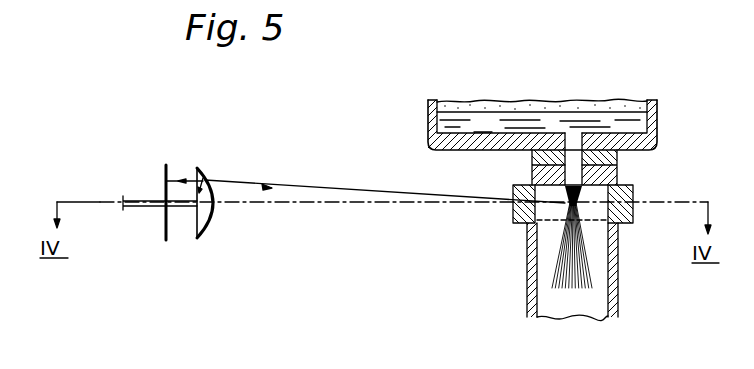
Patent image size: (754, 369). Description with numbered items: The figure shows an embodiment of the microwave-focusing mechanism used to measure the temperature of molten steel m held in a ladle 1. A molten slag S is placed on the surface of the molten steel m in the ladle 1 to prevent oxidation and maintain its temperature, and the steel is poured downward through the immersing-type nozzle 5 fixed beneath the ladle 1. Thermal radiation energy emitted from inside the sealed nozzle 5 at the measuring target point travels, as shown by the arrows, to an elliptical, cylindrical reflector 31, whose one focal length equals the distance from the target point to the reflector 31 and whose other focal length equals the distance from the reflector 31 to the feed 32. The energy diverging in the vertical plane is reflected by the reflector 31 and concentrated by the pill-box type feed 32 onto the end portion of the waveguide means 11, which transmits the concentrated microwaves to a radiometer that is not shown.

The ladle 1 is at (562, 119).
The immersing-type nozzle 5 is at (633, 195).
The waveguide means 11 is at (142, 208).
The reflector 31 is at (165, 193).
The feed 32 is at (203, 172).
The molten slag S is at (606, 102).
The molten steel m is at (483, 123).